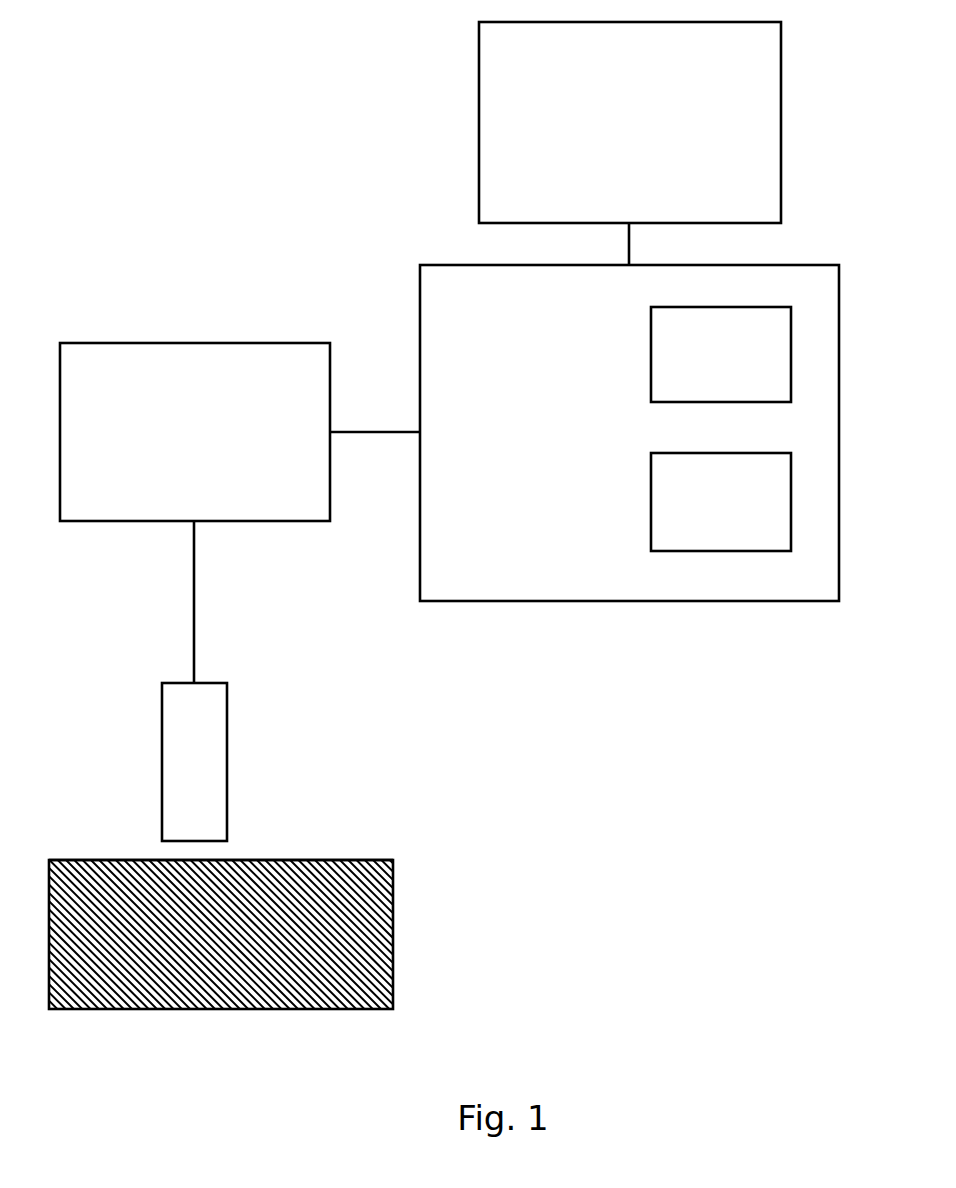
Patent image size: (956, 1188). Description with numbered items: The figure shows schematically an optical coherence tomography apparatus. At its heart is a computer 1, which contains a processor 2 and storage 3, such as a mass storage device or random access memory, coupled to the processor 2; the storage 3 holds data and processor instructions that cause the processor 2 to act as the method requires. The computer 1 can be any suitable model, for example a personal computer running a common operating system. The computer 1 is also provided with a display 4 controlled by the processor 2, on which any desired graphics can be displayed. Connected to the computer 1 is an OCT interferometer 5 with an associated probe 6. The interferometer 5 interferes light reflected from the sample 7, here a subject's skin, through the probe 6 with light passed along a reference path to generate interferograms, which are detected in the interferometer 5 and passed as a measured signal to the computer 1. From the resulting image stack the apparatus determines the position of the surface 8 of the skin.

The computer 1 is at (420, 308).
The processor 2 is at (791, 356).
The storage 3 is at (791, 500).
The display 4 is at (479, 133).
The OCT interferometer 5 is at (193, 343).
The probe 6 is at (227, 758).
The sample 7 is at (393, 936).
The surface 8 is at (330, 860).